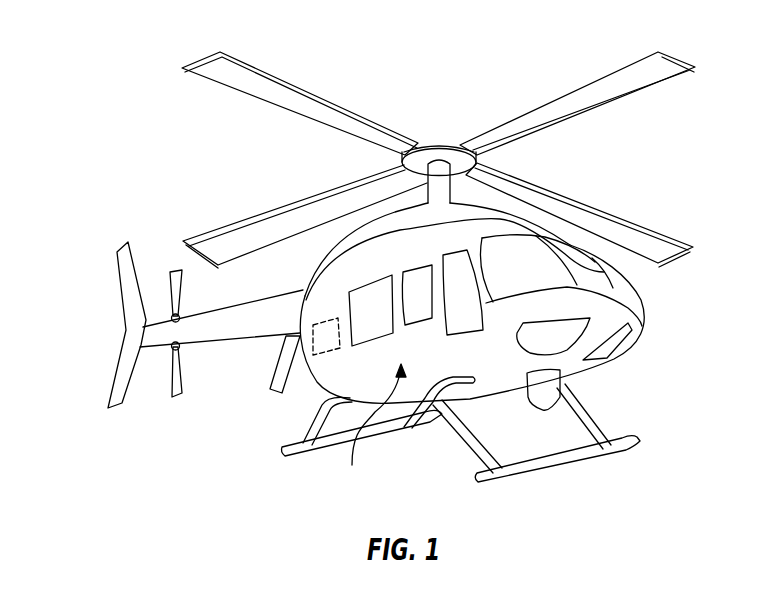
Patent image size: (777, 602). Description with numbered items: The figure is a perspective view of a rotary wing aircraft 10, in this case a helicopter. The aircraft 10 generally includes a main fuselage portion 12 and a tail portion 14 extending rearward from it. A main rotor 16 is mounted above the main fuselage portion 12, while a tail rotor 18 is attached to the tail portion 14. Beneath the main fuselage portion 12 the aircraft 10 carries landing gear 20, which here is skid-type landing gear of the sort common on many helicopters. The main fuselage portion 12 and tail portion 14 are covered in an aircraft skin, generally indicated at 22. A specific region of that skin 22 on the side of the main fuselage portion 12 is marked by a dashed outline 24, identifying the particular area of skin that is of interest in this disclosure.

The rotary wing aircraft 10 is at (143, 63).
The main fuselage portion 12 is at (317, 306).
The tail portion 14 is at (130, 298).
The main rotor 16 is at (317, 96).
The tail rotor 18 is at (178, 400).
The landing gear 20 is at (545, 473).
The aircraft skin 22 is at (376, 433).
The dashed outline 24 is at (322, 357).